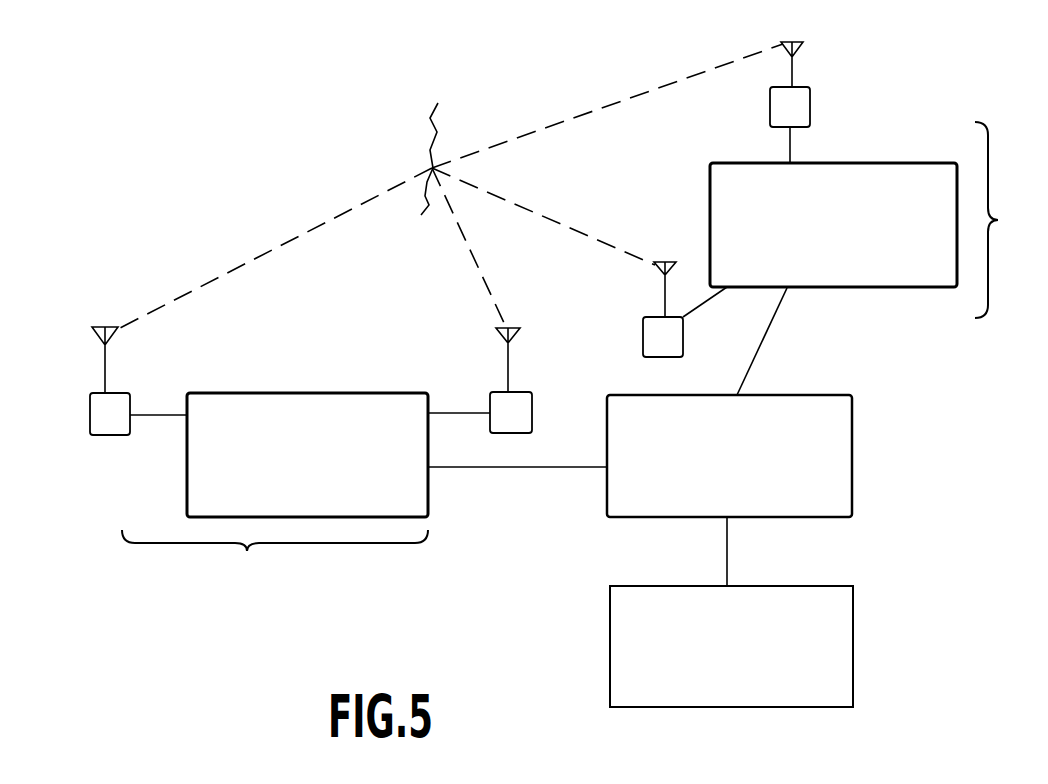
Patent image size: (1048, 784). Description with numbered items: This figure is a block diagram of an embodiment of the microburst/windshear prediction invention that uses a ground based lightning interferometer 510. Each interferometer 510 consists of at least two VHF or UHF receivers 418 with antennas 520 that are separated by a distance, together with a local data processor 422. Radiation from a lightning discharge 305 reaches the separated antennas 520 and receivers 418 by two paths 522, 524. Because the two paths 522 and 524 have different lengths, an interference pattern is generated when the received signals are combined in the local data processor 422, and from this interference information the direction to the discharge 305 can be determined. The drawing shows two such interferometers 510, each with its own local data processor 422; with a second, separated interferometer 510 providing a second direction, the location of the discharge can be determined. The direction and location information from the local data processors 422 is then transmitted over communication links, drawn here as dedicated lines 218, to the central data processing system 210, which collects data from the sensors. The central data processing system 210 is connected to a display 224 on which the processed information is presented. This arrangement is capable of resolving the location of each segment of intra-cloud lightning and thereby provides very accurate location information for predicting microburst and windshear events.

The lightning discharge 305 is at (445, 143).
The path 522 is at (602, 112).
The path 524 is at (506, 204).
The antennas 520 is at (107, 326).
The VHF or UHF receivers 418 is at (90, 422).
The local data processor 422 is at (395, 393).
The ground based lightning interferometer 510 is at (582, 354).
The dedicated lines 218 is at (535, 467).
The central data processing system 210 is at (853, 418).
The display 224 is at (853, 636).